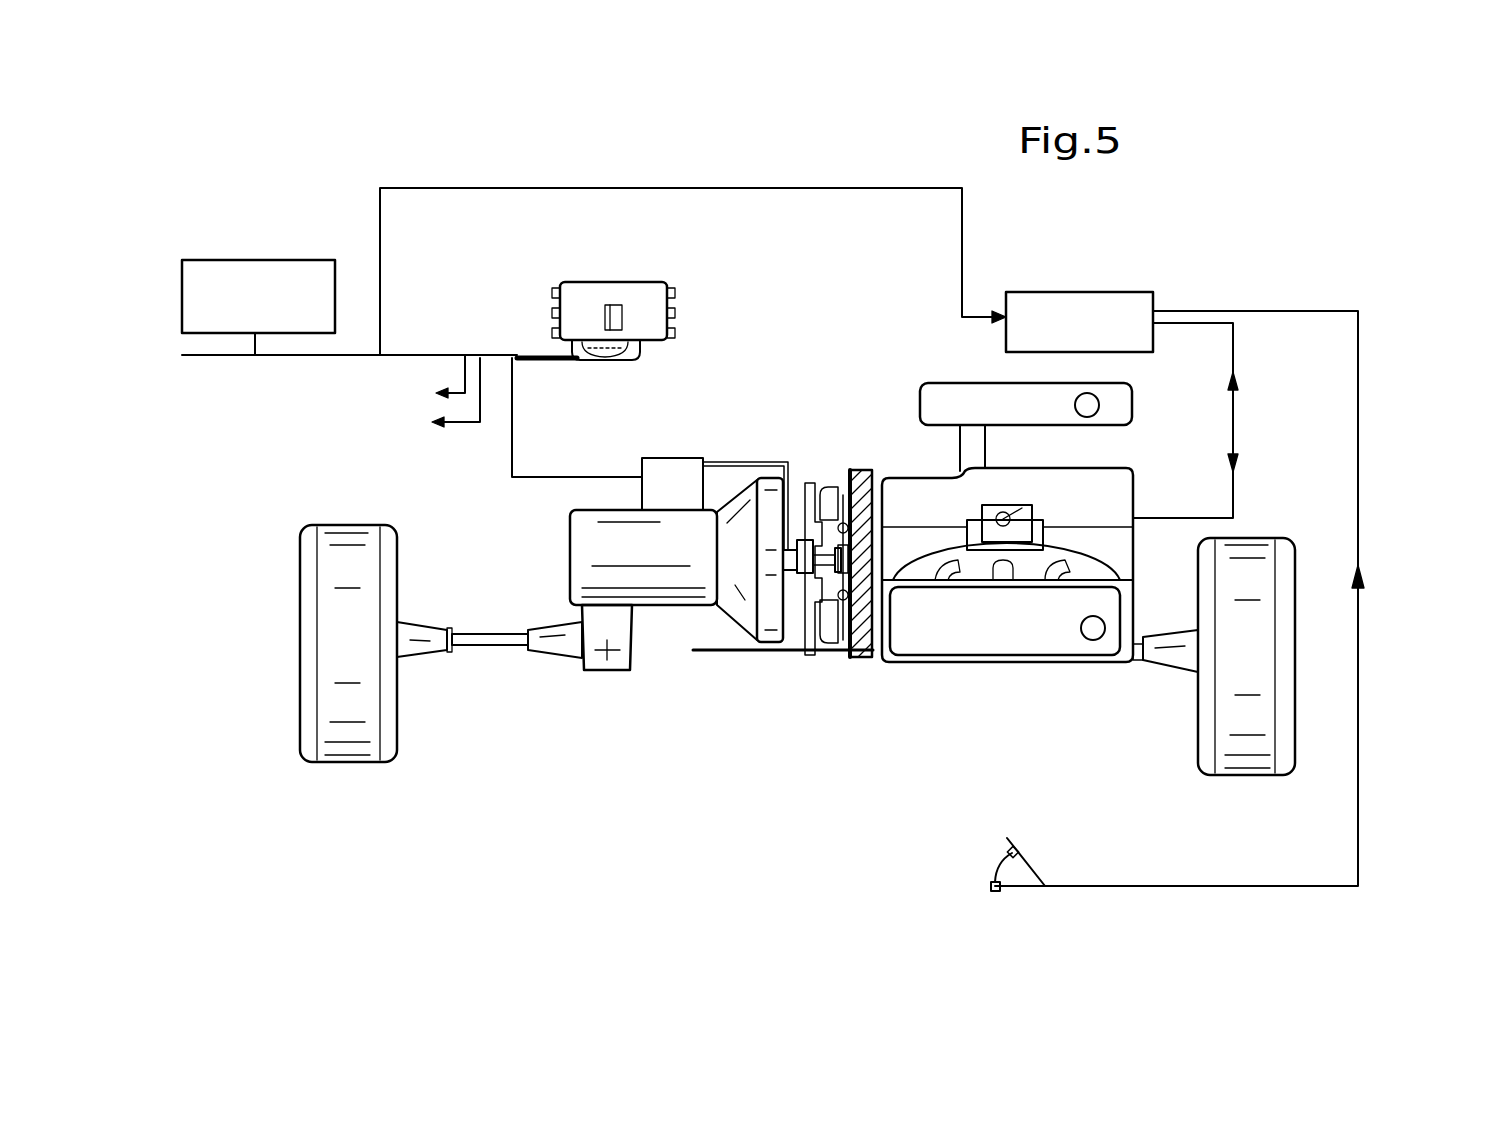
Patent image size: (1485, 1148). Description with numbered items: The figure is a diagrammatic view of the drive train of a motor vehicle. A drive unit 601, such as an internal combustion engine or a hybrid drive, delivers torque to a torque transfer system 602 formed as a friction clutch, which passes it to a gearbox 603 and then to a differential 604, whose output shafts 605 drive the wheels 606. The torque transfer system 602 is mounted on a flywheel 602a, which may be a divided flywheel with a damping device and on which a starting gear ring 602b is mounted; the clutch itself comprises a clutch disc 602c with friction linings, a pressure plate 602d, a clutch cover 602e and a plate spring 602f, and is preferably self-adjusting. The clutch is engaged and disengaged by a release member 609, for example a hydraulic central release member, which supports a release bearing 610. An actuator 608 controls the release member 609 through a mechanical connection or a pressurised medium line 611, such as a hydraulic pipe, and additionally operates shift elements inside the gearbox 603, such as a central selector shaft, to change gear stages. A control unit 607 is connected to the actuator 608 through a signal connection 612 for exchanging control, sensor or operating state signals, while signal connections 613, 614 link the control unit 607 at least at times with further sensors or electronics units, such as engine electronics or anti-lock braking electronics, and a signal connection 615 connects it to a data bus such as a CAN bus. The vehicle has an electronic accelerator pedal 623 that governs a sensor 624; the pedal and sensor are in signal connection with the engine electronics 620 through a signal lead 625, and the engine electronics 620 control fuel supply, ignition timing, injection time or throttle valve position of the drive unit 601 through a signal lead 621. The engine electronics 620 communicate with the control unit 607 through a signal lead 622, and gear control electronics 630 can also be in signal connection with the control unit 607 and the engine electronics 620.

The drive unit 601 is at (1122, 483).
The torque transfer system 602 is at (847, 527).
The flywheel 602a is at (862, 632).
The starting gear ring 602b is at (875, 472).
The clutch disc 602c is at (842, 490).
The pressure plate 602d is at (833, 493).
The clutch cover 602e is at (820, 645).
The plate spring 602f is at (812, 492).
The gearbox 603 is at (736, 606).
The differential 604 is at (607, 652).
The output shafts 605 is at (484, 642).
The wheels 606 is at (347, 745).
The control unit 607 is at (640, 300).
The actuator 608 is at (667, 470).
The release member 609 is at (782, 643).
The release bearing 610 is at (810, 600).
The pressurised medium line 611 is at (725, 462).
The signal connection 612 is at (535, 477).
The signal connection 613 is at (451, 425).
The signal connection 614 is at (436, 383).
The signal connection 615 is at (438, 355).
The engine electronics 620 is at (1108, 338).
The signal lead 621 is at (1215, 420).
The signal lead 622 is at (760, 188).
The electronic accelerator pedal 623 is at (1028, 860).
The sensor 624 is at (995, 892).
The signal lead 625 is at (1358, 608).
The gear control electronics 630 is at (290, 309).